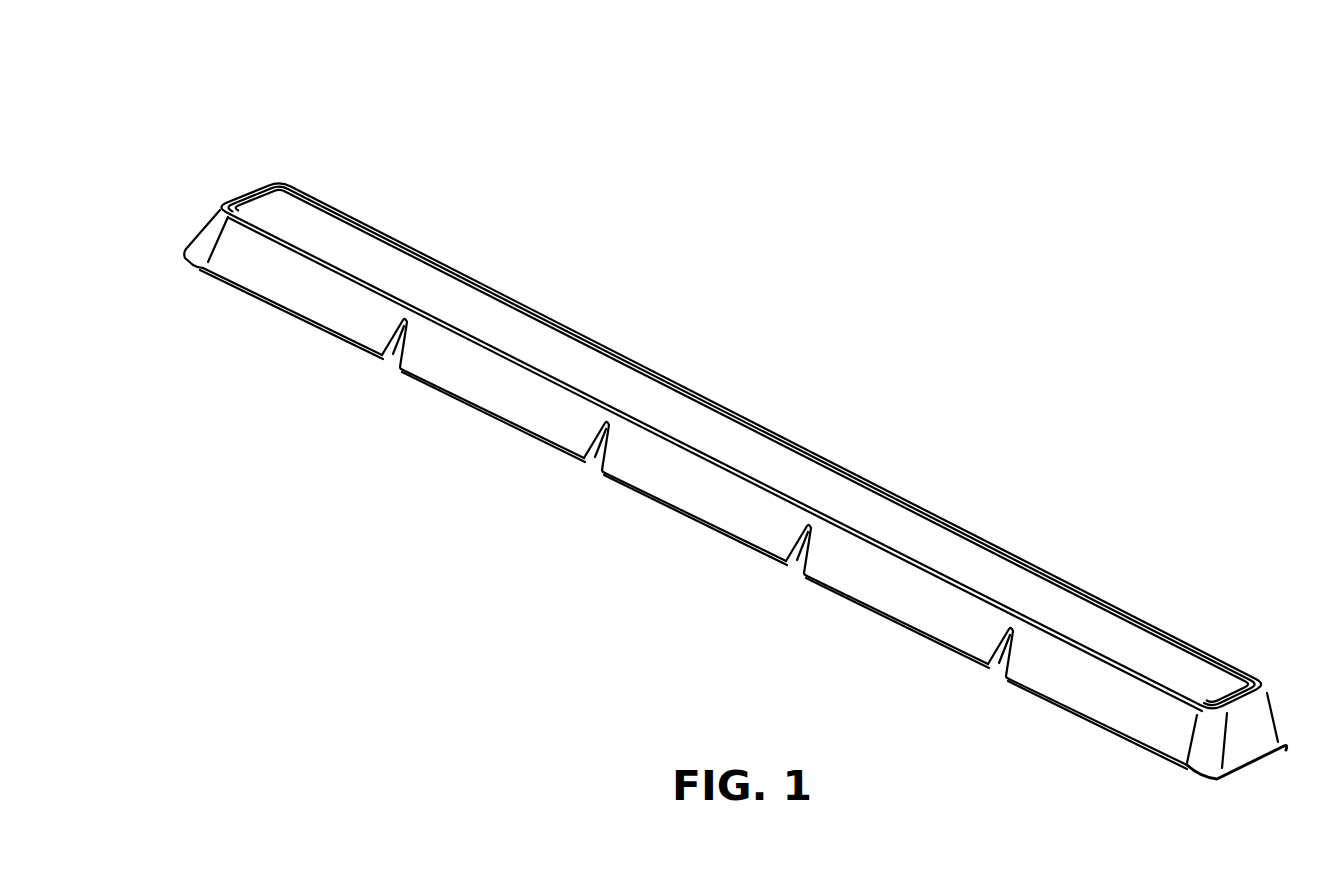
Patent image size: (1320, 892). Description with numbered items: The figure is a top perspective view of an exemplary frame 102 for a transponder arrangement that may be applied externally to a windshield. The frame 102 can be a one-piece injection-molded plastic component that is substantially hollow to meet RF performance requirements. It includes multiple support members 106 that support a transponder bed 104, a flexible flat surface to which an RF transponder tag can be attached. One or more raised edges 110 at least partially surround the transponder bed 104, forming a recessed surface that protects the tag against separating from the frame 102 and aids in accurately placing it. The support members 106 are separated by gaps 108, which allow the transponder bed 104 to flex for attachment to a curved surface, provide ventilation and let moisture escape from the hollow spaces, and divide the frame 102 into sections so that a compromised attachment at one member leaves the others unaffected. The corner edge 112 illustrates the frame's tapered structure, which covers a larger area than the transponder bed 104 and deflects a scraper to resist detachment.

The frame 102 is at (278, 113).
The transponder bed 104 is at (1183, 660).
The support members 106 is at (486, 398).
The gaps 108 is at (392, 352).
The raised edges 110 is at (600, 343).
The corner edge 112 is at (191, 243).